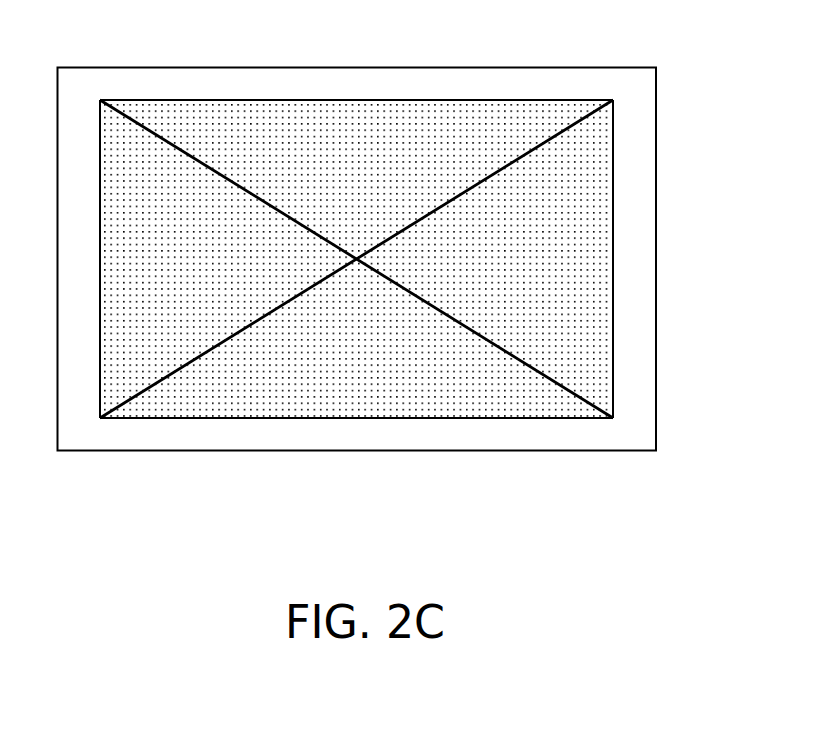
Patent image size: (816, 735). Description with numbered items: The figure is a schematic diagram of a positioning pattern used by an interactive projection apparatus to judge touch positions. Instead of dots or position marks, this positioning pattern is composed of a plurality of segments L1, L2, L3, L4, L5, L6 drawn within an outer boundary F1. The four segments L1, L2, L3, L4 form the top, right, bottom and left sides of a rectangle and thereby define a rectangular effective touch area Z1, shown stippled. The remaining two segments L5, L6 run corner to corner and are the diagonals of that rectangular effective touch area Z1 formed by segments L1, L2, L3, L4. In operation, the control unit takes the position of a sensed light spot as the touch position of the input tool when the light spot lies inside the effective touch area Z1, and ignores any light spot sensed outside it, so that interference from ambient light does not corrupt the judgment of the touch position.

The frame F1 is at (656, 108).
The effective touch area Z1 is at (597, 206).
The segment L1 is at (389, 100).
The segment L2 is at (613, 330).
The segment L3 is at (388, 418).
The segment L4 is at (100, 285).
The segment L5 is at (570, 125).
The segment L6 is at (553, 382).